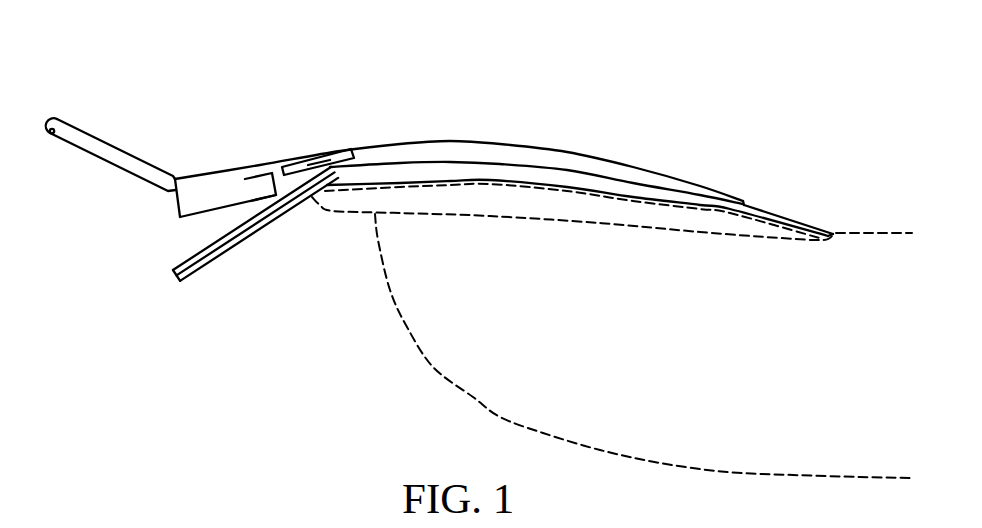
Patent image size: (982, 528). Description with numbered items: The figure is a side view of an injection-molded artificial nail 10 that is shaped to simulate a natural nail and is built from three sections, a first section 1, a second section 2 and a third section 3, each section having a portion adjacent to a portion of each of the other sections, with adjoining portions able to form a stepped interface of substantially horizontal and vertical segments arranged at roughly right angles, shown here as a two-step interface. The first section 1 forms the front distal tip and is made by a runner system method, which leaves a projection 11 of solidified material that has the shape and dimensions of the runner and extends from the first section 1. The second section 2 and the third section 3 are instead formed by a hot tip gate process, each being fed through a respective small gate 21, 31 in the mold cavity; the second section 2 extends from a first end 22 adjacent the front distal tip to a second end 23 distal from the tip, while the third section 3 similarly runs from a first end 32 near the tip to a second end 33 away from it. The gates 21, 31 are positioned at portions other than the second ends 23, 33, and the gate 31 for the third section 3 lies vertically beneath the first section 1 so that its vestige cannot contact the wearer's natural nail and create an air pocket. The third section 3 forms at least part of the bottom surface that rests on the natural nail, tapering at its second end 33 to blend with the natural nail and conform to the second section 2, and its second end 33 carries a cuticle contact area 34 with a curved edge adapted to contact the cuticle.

The artificial nail 10 is at (488, 82).
The first section 1 is at (229, 164).
The projection 11 is at (102, 139).
The second section 2 is at (560, 148).
The gate 21 is at (329, 160).
The first end 22 is at (308, 165).
The second end 23 is at (743, 201).
The third section 3 is at (765, 202).
The gate 31 is at (275, 192).
The first end 32 is at (257, 182).
The second end 33 is at (790, 218).
The cuticle contact area 34 is at (832, 233).